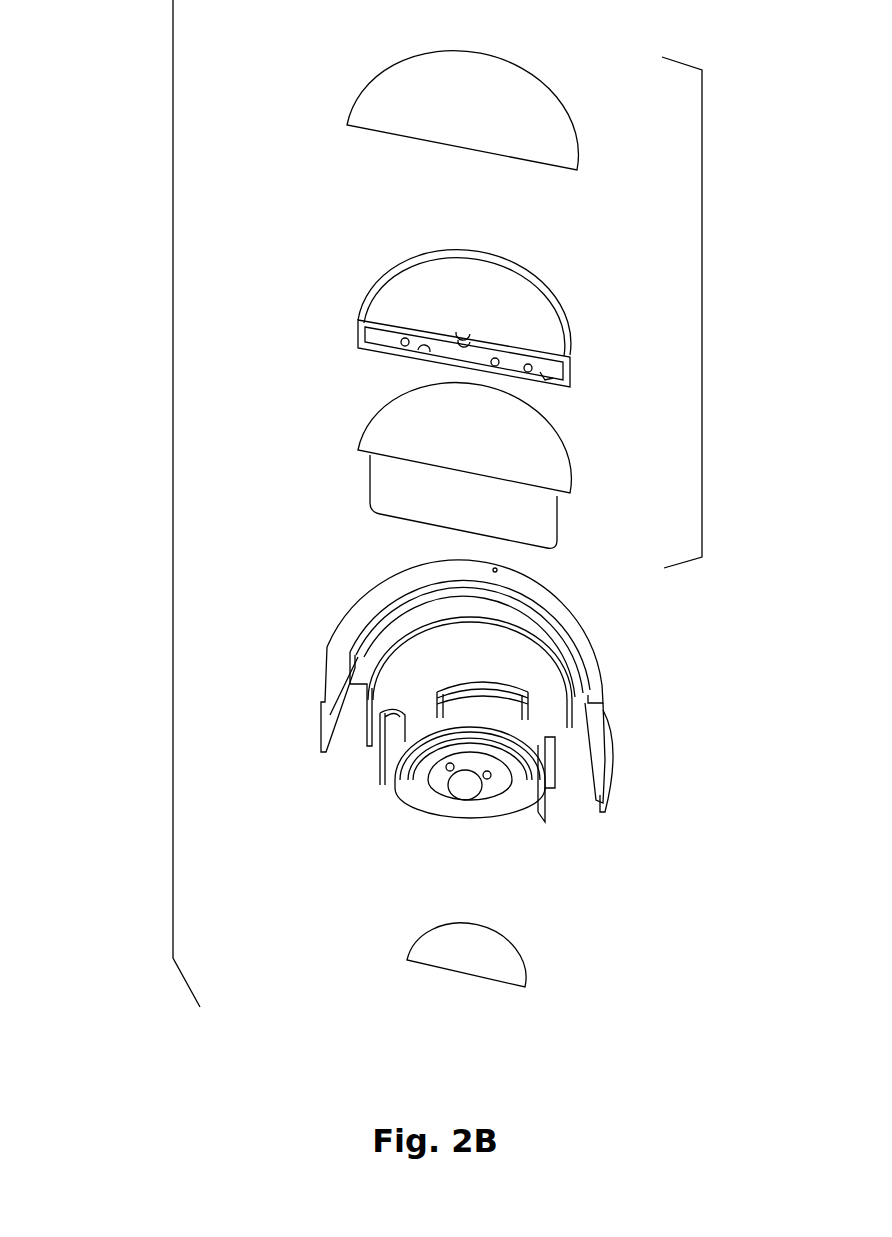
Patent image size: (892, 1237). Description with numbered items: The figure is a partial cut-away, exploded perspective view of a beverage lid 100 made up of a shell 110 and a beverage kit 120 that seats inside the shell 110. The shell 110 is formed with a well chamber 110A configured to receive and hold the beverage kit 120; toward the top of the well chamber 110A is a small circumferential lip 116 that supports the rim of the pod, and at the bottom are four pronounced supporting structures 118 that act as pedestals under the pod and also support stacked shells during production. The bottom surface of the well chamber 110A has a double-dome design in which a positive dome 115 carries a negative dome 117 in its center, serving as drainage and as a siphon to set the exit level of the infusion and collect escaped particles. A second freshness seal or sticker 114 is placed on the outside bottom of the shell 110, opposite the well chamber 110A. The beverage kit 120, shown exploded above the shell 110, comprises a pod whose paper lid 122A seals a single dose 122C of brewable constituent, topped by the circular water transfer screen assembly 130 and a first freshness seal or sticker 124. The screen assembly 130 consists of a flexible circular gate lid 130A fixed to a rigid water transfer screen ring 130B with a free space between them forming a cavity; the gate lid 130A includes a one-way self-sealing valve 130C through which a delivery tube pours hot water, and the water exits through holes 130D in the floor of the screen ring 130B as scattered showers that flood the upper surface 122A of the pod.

The lid 100 is at (173, 492).
The shell 110 is at (493, 721).
The well chamber 110A is at (452, 671).
The second freshness seal or sticker 114 is at (448, 959).
The positive dome 115 is at (433, 773).
The circumferential lip 116 is at (541, 642).
The negative dome 117 is at (462, 787).
The supporting structures 118 is at (460, 705).
The beverage kit 120 is at (702, 326).
The paper lid 122A is at (452, 448).
The single dose 122C is at (358, 453).
The first freshness seal or sticker 124 is at (453, 111).
The circular water transfer screen assembly 130 is at (360, 271).
The circular gate lid 130A is at (500, 311).
The water transfer screen ring 130B is at (360, 332).
The one-way self-sealing valve 130C is at (463, 332).
The holes 130D is at (425, 357).